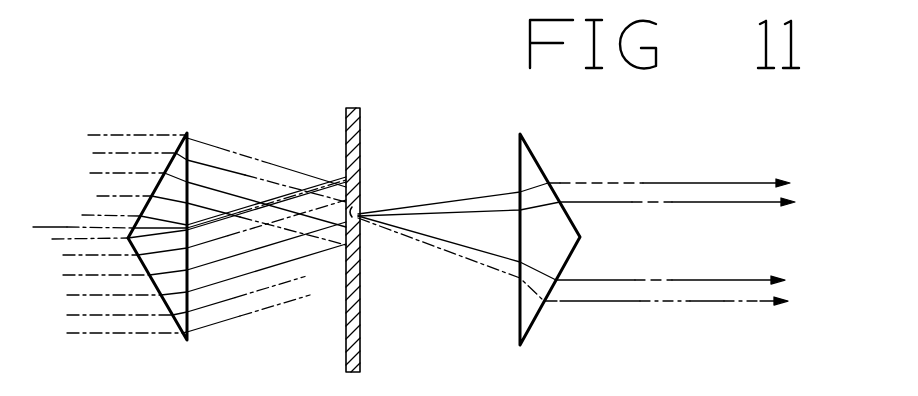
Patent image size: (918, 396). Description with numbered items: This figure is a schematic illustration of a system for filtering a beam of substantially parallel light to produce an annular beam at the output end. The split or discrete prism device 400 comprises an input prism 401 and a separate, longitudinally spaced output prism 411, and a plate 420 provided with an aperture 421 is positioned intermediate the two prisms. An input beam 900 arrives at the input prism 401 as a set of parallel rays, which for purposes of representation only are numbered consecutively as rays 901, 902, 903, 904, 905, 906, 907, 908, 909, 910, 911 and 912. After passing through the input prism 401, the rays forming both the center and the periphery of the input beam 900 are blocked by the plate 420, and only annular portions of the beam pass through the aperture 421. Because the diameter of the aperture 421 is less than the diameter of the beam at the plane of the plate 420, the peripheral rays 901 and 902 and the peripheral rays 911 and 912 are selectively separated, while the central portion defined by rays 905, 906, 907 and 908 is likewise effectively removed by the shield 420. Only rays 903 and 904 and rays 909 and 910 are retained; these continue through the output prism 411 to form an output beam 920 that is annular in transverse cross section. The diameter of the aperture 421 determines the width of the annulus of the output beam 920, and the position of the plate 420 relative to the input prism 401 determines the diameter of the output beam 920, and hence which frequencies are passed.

The input beam 900 is at (88, 82).
The ray 901 is at (86, 134).
The ray 902 is at (90, 152).
The ray 903 is at (92, 172).
The ray 904 is at (97, 193).
The ray 905 is at (80, 213).
The ray 906 is at (67, 226).
The ray 907 is at (83, 240).
The ray 908 is at (90, 257).
The ray 909 is at (102, 277).
The ray 910 is at (106, 297).
The ray 911 is at (100, 317).
The ray 912 is at (97, 336).
The output beam 920 is at (744, 240).
The split or discrete prism device 400 is at (300, 108).
The input prism 401 is at (172, 152).
The output prism 411 is at (534, 147).
The plate 420 is at (360, 126).
The aperture 421 is at (355, 214).